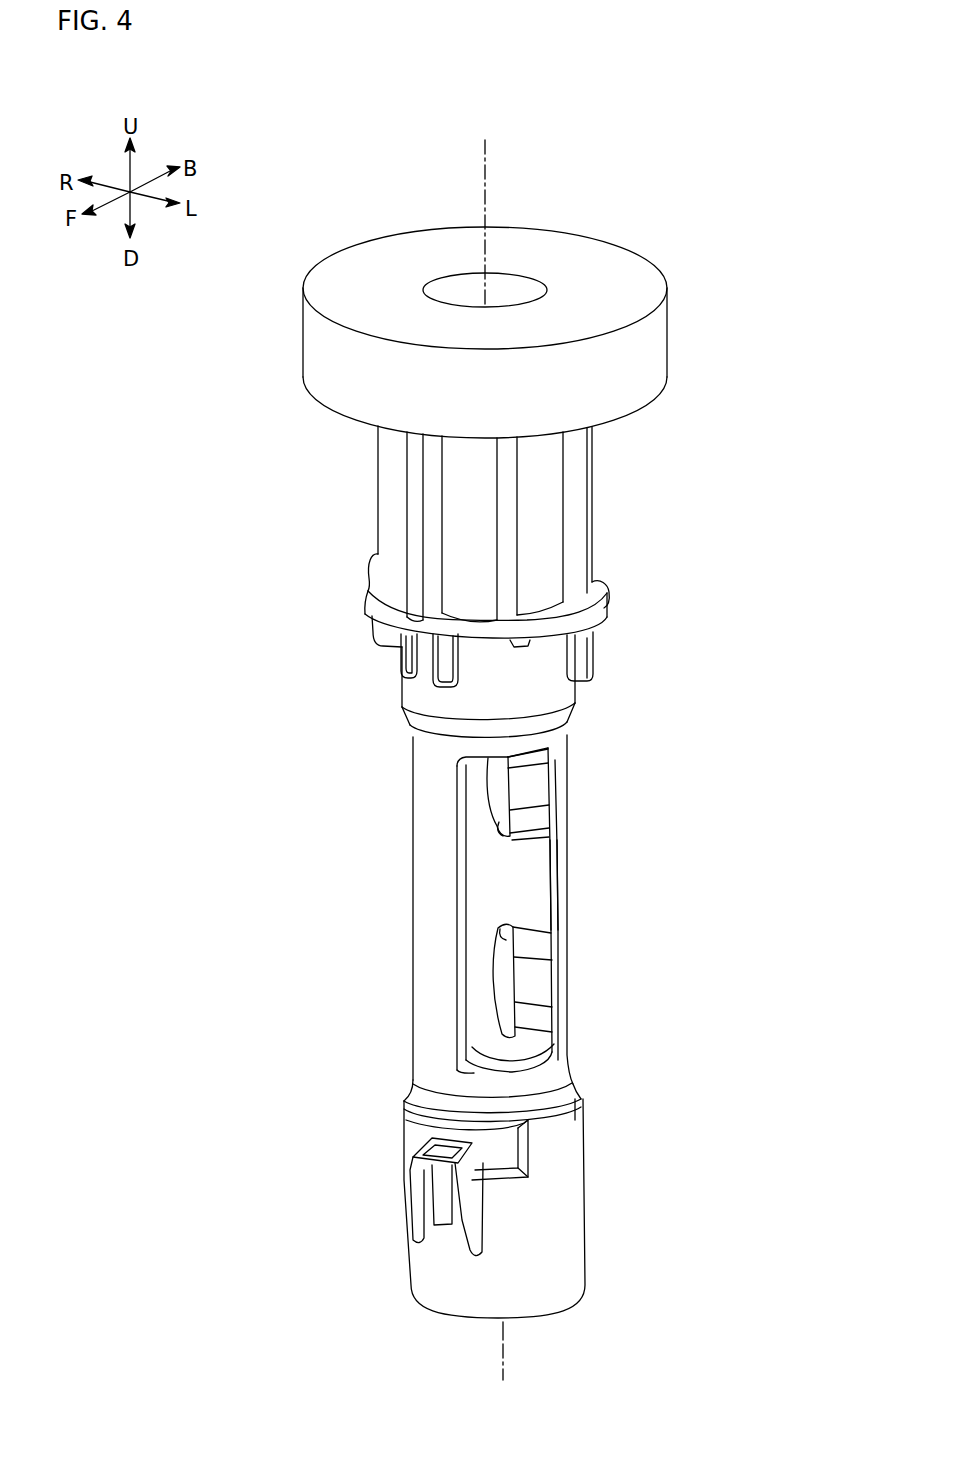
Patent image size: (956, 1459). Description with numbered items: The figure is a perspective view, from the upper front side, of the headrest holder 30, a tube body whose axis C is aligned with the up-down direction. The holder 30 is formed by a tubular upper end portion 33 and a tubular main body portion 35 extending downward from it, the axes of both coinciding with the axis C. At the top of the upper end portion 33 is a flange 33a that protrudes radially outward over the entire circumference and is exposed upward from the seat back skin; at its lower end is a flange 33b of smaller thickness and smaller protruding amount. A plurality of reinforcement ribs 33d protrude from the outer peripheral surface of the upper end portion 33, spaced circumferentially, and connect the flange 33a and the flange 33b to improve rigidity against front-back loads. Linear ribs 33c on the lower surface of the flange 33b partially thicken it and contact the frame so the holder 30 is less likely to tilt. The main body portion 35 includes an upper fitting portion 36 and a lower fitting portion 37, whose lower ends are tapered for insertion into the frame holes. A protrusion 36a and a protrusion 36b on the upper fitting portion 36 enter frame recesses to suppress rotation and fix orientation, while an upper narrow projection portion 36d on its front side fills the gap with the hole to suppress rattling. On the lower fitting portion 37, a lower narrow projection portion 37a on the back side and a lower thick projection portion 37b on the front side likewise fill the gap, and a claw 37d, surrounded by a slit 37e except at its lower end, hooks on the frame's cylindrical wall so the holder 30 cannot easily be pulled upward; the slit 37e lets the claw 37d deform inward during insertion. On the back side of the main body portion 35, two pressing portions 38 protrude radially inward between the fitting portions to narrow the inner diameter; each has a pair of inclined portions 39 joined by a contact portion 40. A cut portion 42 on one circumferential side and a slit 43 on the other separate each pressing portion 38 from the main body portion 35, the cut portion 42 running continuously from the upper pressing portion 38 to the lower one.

The axis C is at (485, 158).
The holder 30 is at (770, 253).
The upper end portion 33 is at (547, 475).
The flange 33a is at (642, 352).
The flange 33b is at (380, 602).
The linear rib 33c is at (603, 618).
The reinforcement rib 33d is at (387, 470).
The main body portion 35 is at (425, 893).
The upper fitting portion 36 is at (412, 688).
The protrusion 36a is at (383, 633).
The protrusion 36b is at (577, 667).
The upper narrow projection portion 36d is at (402, 662).
The lower fitting portion 37 is at (567, 1188).
The lower narrow projection portion 37a is at (587, 1120).
The lower thick projection portion 37b is at (505, 1157).
The claw 37d is at (413, 1177).
The slit 37e is at (482, 1250).
The pressing portion 38 is at (589, 783).
The inclined portion 39 is at (538, 758).
The contact portion 40 is at (533, 800).
The cut portion 42 is at (557, 888).
The slit 43 is at (505, 838).